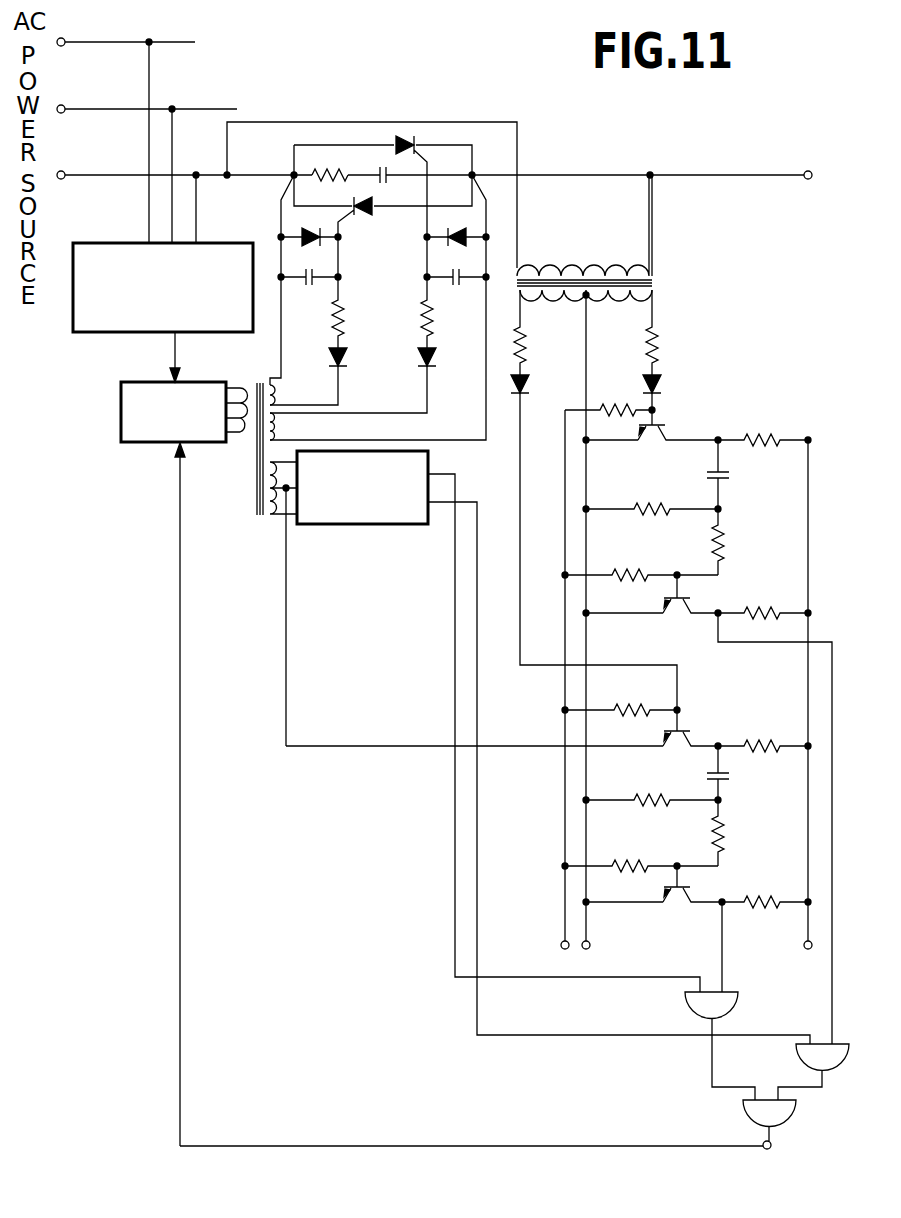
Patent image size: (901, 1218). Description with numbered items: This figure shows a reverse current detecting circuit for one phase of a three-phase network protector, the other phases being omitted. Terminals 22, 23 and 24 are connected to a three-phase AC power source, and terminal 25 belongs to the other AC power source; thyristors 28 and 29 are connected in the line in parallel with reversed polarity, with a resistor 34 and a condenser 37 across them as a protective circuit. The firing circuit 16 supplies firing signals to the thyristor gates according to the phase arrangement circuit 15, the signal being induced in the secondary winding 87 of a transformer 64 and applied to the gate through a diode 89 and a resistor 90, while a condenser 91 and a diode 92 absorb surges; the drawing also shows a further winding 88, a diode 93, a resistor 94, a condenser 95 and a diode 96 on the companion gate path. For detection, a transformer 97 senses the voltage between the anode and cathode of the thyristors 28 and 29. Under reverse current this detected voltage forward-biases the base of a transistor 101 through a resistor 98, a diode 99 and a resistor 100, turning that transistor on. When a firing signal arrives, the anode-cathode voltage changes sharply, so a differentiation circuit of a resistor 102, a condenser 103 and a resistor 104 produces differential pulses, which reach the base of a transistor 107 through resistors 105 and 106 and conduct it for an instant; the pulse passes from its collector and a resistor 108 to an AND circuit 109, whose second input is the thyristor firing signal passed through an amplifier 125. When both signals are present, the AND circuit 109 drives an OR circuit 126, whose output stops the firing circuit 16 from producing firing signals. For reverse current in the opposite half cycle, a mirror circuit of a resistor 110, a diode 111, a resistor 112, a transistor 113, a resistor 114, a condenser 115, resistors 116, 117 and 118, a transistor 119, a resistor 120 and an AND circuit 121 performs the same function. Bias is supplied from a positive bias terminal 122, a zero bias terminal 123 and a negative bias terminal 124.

The phase arrangement circuit 15 is at (101, 243).
The firing circuit 16 is at (121, 410).
The terminal 22 is at (66, 173).
The terminal 23 is at (66, 107).
The terminal 24 is at (66, 40).
The terminal 25 is at (802, 171).
The thyristor 28 is at (404, 133).
The thyristor 29 is at (354, 220).
The resistor 34 is at (330, 164).
The condenser 37 is at (396, 185).
The transformer 64 is at (253, 472).
The secondary winding 87 is at (284, 429).
The transformer winding 88 is at (284, 395).
The diode 89 is at (366, 380).
The resistor 90 is at (415, 292).
The condenser 91 is at (456, 290).
The diode 92 is at (456, 229).
The diode 93 is at (308, 376).
The resistor 94 is at (352, 292).
The capacitor 95 is at (309, 290).
The diode 96 is at (309, 229).
The transformer 97 is at (660, 282).
The resistor 98 is at (665, 332).
The diode 99 is at (664, 400).
The resistor 100 is at (610, 398).
The transistor 101 is at (652, 446).
The resistor 102 is at (764, 428).
The condenser 103 is at (735, 474).
The resistor 104 is at (652, 520).
The resistor 105 is at (738, 542).
The resistor 106 is at (640, 590).
The transistor 107 is at (652, 608).
The resistor 108 is at (764, 599).
The AND circuit 109 is at (822, 1072).
The resistor 110 is at (539, 332).
The diode 111 is at (594, 542).
The resistor 112 is at (621, 698).
The transistor 113 is at (503, 741).
The resistor 114 is at (764, 732).
The condenser 115 is at (735, 773).
The resistor 116 is at (652, 813).
The resistor 117 is at (738, 833).
The resistor 118 is at (640, 879).
The transistor 119 is at (654, 897).
The resistor 120 is at (766, 888).
The AND circuit 121 is at (730, 1046).
The positive bias terminal 122 is at (804, 945).
The zero bias terminal 123 is at (604, 955).
The negative bias terminal 124 is at (561, 945).
The amplifier 125 is at (340, 524).
The OR circuit 126 is at (779, 1124).